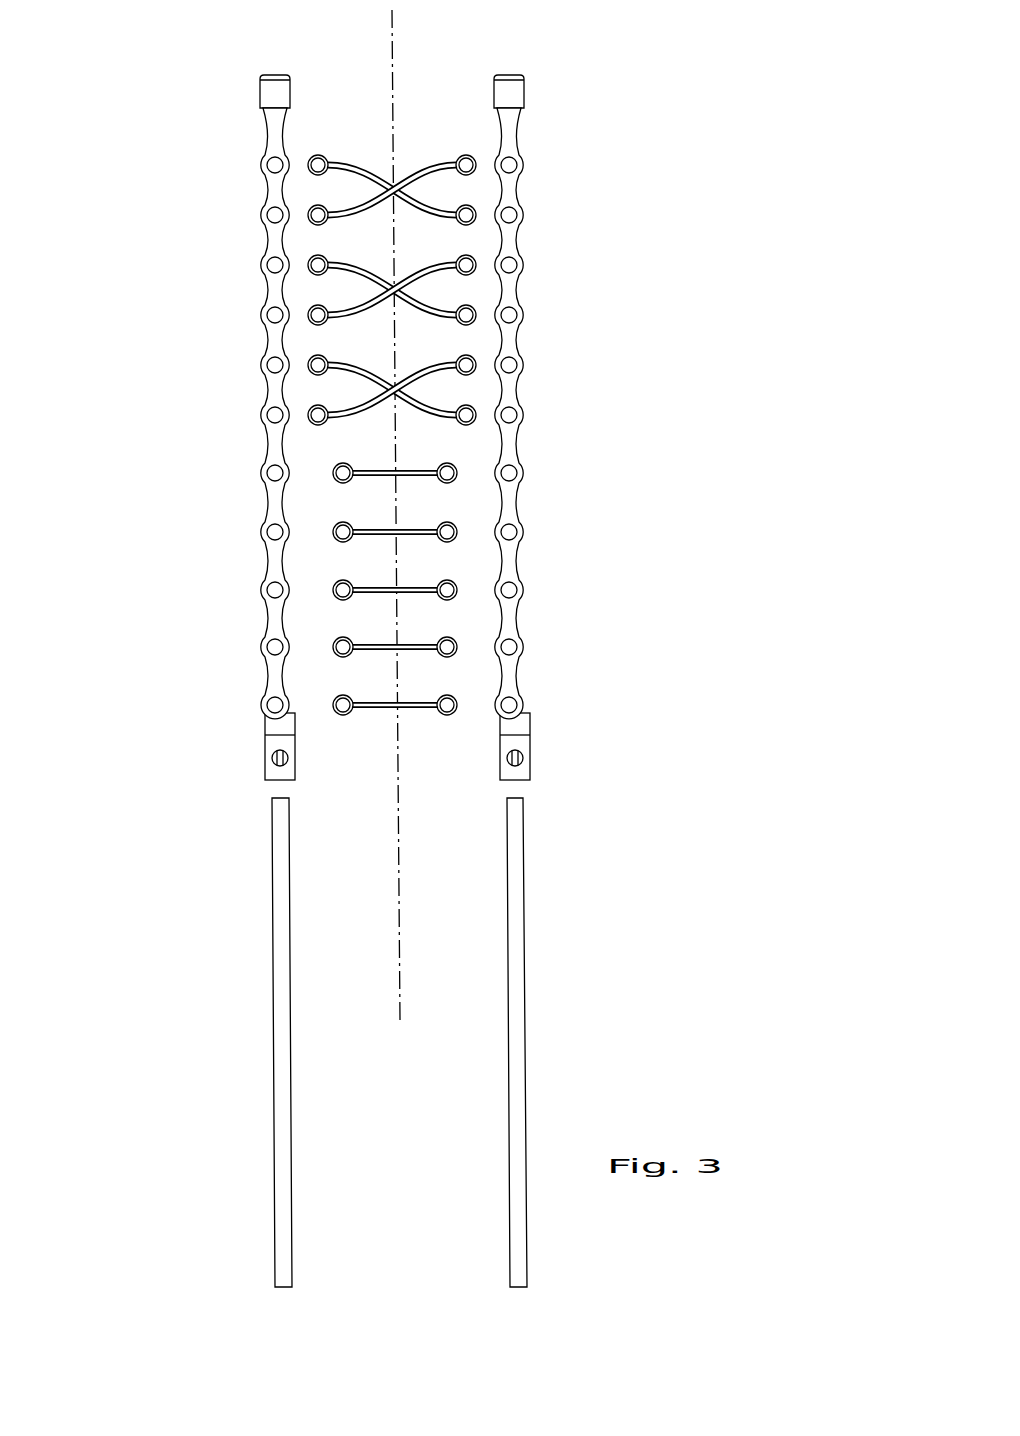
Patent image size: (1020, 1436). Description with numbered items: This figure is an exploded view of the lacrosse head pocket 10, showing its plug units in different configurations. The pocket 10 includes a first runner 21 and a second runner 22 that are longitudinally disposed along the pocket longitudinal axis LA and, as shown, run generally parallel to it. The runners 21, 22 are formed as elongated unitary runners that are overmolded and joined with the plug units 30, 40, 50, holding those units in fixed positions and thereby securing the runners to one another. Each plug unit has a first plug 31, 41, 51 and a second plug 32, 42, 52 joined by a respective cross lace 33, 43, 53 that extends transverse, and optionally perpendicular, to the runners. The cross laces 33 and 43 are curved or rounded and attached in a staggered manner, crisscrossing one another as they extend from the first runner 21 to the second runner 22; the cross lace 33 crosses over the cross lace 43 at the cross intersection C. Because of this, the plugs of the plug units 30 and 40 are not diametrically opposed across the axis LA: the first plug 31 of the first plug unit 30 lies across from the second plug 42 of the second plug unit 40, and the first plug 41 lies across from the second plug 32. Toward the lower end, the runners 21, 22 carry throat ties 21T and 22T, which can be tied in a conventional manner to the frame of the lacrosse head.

The lacrosse head pocket 10 is at (183, 214).
The first runner 21 is at (254, 98).
The second runner 22 is at (519, 69).
The throat tie 21T is at (285, 1135).
The throat tie 22T is at (517, 1132).
The pocket longitudinal axis LA is at (394, 47).
The cross intersection C is at (394, 387).
The first plug unit 30 is at (338, 400).
The first plug 31 is at (323, 373).
The second plug 32 is at (467, 425).
The cross lace 33 is at (420, 407).
The second plug unit 40 is at (330, 389).
The first plug 41 is at (323, 425).
The second plug 42 is at (464, 355).
The cross lace 43 is at (420, 375).
The plug unit 50 is at (347, 475).
The first plug 51 is at (339, 483).
The second plug 52 is at (449, 483).
The cross lace 53 is at (387, 479).